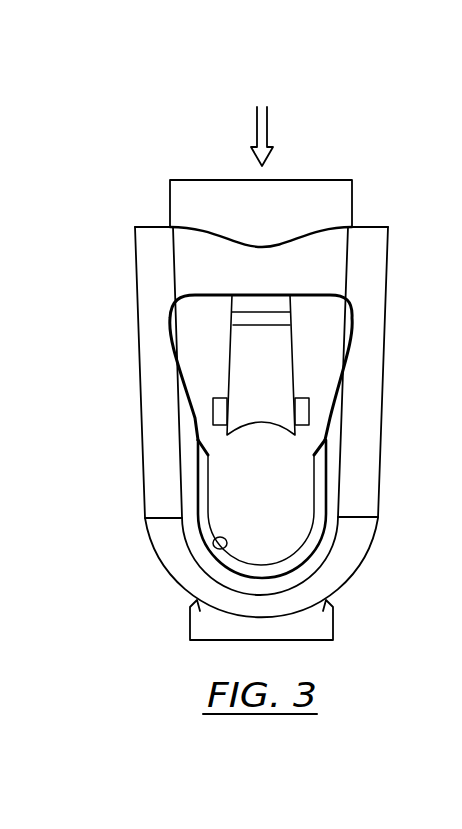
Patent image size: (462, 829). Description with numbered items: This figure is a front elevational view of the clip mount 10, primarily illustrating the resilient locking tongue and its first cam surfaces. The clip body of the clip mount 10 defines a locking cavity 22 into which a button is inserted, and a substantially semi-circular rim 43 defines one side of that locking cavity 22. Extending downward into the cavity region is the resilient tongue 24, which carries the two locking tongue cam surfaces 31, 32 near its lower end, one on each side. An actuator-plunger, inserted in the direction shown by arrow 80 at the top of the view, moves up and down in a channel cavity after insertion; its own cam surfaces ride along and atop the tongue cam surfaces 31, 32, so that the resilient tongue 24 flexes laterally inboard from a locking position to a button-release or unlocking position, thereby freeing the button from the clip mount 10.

The clip mount 10 is at (380, 483).
The locking cavity 22 is at (251, 517).
The resilient tongue 24 is at (300, 348).
The resilient locking tongue cam surface 31 is at (310, 414).
The tongue cam surface 32 is at (213, 409).
The semi-circular rim 43 is at (214, 544).
The arrow 80 is at (257, 131).